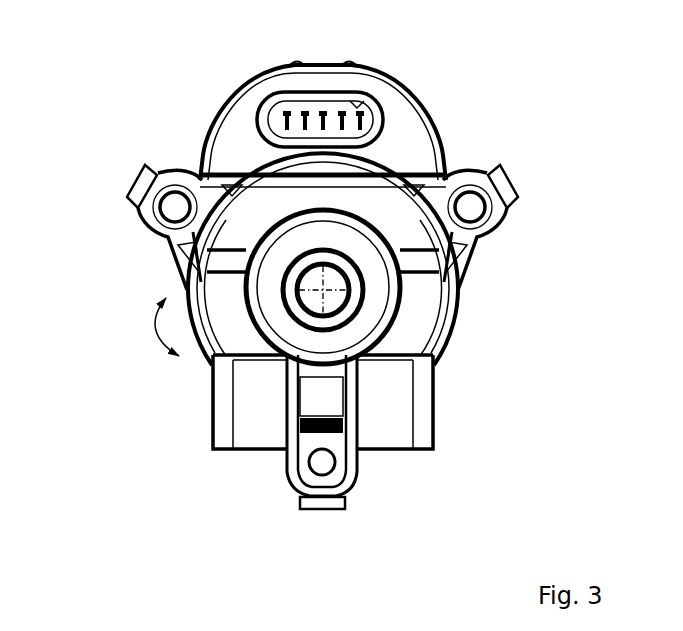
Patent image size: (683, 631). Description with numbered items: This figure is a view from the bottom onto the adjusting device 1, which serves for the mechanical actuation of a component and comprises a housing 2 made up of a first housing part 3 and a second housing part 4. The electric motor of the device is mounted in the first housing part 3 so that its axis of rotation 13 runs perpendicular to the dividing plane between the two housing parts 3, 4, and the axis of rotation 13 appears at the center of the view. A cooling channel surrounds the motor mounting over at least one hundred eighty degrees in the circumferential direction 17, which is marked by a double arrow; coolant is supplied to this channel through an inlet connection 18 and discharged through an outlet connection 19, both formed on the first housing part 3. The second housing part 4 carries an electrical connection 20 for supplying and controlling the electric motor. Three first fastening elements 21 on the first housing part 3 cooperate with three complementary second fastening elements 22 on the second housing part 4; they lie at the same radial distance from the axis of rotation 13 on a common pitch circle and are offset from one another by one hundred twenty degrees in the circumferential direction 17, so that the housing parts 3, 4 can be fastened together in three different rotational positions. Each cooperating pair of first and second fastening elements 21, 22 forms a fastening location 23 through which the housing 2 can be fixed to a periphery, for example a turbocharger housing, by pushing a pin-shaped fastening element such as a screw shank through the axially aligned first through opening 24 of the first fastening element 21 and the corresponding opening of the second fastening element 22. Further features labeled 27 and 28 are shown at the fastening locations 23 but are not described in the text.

The adjusting device 1 is at (589, 127).
The housing 2 is at (465, 324).
The first housing part 3 is at (346, 426).
The second housing part 4 is at (432, 101).
The axis of rotation 13 is at (345, 306).
The circumferential direction 17 is at (160, 328).
The inlet connection 18 is at (252, 454).
The outlet connection 19 is at (397, 454).
The electrical connection 20 is at (322, 90).
The first fastening elements 21 is at (324, 330).
The second fastening elements 22 is at (174, 182).
The fastening location 23 is at (108, 183).
The first through opening 24 is at (172, 212).
The second stop surface 27 is at (108, 202).
The stop face 28 is at (136, 185).